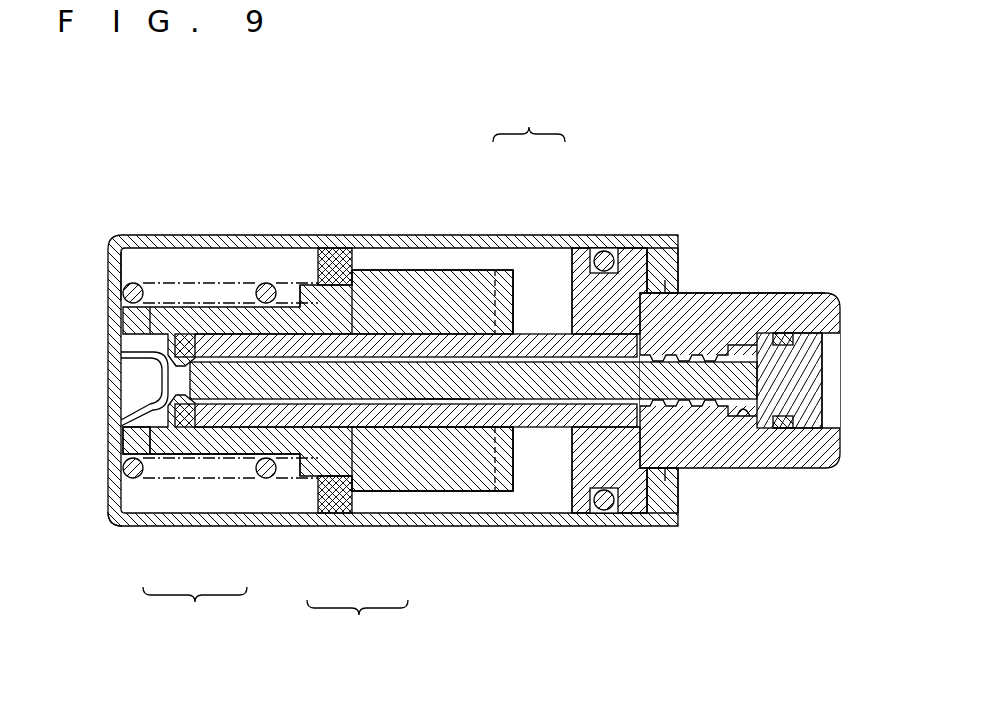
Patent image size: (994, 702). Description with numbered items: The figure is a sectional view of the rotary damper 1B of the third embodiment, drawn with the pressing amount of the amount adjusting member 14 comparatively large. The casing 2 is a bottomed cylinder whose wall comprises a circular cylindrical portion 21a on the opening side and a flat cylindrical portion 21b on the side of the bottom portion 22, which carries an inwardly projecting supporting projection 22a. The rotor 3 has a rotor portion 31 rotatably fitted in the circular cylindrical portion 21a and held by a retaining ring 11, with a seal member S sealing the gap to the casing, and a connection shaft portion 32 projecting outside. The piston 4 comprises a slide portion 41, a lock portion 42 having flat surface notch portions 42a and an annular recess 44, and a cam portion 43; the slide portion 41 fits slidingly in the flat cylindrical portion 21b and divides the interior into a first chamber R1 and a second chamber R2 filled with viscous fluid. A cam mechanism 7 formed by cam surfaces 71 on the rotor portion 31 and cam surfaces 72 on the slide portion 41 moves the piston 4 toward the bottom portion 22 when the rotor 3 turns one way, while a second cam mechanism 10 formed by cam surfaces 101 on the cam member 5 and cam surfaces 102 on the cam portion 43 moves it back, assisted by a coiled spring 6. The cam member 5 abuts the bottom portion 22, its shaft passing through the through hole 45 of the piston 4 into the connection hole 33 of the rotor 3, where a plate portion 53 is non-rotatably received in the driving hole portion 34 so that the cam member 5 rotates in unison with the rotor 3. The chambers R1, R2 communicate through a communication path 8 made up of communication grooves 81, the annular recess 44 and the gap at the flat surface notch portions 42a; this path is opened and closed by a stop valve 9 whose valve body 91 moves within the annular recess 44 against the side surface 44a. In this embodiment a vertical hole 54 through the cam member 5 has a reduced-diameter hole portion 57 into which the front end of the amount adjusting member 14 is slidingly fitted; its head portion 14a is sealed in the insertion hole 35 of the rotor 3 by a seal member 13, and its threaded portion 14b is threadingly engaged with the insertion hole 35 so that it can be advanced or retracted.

The rotary damper 1B is at (443, 188).
The casing 2 is at (263, 233).
The circular cylindrical portion 21a is at (655, 262).
The flat cylindrical portion 21b is at (151, 295).
The bottom portion 22 is at (83, 270).
The supporting projection 22a is at (125, 415).
The rotor 3 is at (743, 288).
The rotor portion 31 is at (647, 237).
The connection shaft portion 32 is at (777, 308).
The connection hole 33 is at (596, 256).
The driving hole portion 34 is at (620, 308).
The insertion hole 35 is at (748, 414).
The piston 4 is at (450, 494).
The slide portion 41 is at (477, 472).
The lock portion 42 is at (292, 470).
The flat surface notch portions 42a is at (300, 298).
The cam portion 43 is at (262, 285).
The annular recess 44 is at (335, 260).
The side surface 44a is at (350, 492).
The through hole 45 is at (513, 447).
The cam member 5 is at (135, 237).
The plate portion 53 is at (613, 514).
The vertical hole 54 is at (433, 400).
The reduced-diameter hole portion 57 is at (212, 373).
The coiled spring 6 is at (128, 527).
The cam mechanism 7 is at (529, 121).
The cam surfaces 71 is at (540, 283).
The cam surfaces 72 is at (517, 283).
The communication path 8 is at (415, 266).
The communication grooves 81 is at (455, 268).
The stop valve 9 is at (357, 622).
The valve body 91 is at (340, 497).
The second cam mechanism 10 is at (195, 610).
The cam surfaces 101 is at (152, 480).
The cam surfaces 102 is at (207, 482).
The retaining ring 11 is at (660, 500).
The seal member 13 is at (782, 424).
The amount adjusting member 14 is at (825, 385).
The head portion 14a is at (807, 343).
The threaded portion 14b is at (700, 385).
The first chamber R1 is at (252, 500).
The second chamber R2 is at (560, 500).
The seal member S is at (598, 512).